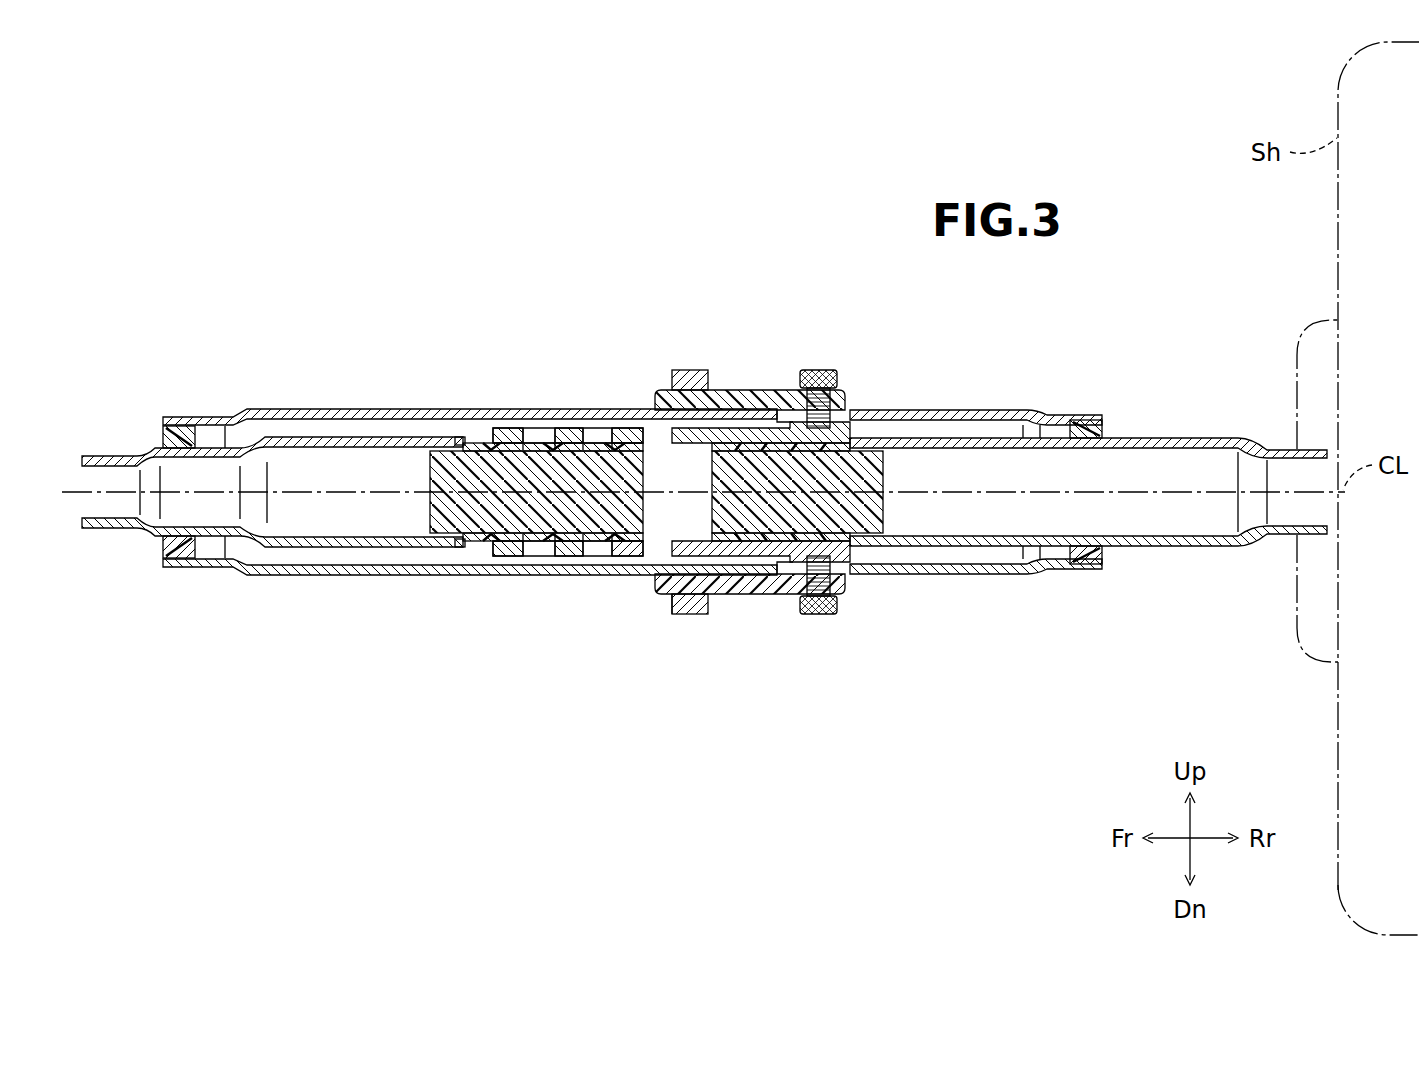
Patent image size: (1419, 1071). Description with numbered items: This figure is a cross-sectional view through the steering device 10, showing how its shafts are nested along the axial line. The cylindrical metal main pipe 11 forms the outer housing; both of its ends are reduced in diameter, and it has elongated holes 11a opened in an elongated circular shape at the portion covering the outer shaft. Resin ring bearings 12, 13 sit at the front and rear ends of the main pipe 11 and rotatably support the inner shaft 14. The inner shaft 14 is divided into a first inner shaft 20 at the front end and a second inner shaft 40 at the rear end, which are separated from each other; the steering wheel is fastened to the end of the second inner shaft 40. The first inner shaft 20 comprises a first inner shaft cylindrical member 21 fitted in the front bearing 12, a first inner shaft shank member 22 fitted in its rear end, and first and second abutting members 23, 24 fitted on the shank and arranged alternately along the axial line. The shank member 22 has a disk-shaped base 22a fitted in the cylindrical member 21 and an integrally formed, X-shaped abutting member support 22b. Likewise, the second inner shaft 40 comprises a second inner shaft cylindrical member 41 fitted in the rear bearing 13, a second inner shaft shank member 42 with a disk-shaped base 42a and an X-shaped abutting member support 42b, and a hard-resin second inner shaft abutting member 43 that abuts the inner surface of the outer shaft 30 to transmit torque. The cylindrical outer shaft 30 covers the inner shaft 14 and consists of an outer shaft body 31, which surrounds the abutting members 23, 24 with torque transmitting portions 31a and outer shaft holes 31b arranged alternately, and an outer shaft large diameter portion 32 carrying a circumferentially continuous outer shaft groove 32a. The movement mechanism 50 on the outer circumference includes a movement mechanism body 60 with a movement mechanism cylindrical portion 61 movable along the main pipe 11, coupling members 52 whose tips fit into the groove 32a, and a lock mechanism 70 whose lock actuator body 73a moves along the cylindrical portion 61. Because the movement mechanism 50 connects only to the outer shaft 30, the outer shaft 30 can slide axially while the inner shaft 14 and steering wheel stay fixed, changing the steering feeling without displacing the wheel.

The steering device 10 is at (248, 187).
The main pipe 11 is at (343, 408).
The elongated holes 11a is at (785, 574).
The bearing 12 is at (160, 431).
The bearing 13 is at (1105, 432).
The inner shaft 14 is at (704, 523).
The first inner shaft 20 is at (267, 692).
The first inner shaft cylindrical member 21 is at (332, 547).
The first inner shaft shank member 22 is at (360, 638).
The base 22a is at (428, 517).
The abutting member support 22b is at (475, 535).
The first abutting member 23 is at (482, 543).
The second abutting member 24 is at (505, 543).
The outer shaft 30 is at (523, 302).
The outer shaft body 31 is at (485, 350).
The torque transmitting portions 31a is at (503, 430).
The outer shaft holes 31b is at (537, 433).
The outer shaft large diameter portion 32 is at (797, 421).
The outer shaft groove 32a is at (826, 450).
The second inner shaft 40 is at (1170, 437).
The second inner shaft cylindrical member 41 is at (982, 430).
The second inner shaft shank member 42 is at (863, 350).
The base 42a is at (888, 462).
The abutting member support 42b is at (832, 446).
The second inner shaft abutting member 43 is at (837, 536).
The movement mechanism 50 is at (682, 694).
The coupling members 52 is at (817, 369).
The movement mechanism body 60 is at (750, 595).
The movement mechanism cylindrical portion 61 is at (733, 596).
The lock mechanism 70 is at (689, 614).
The lock actuator body 73a is at (670, 596).